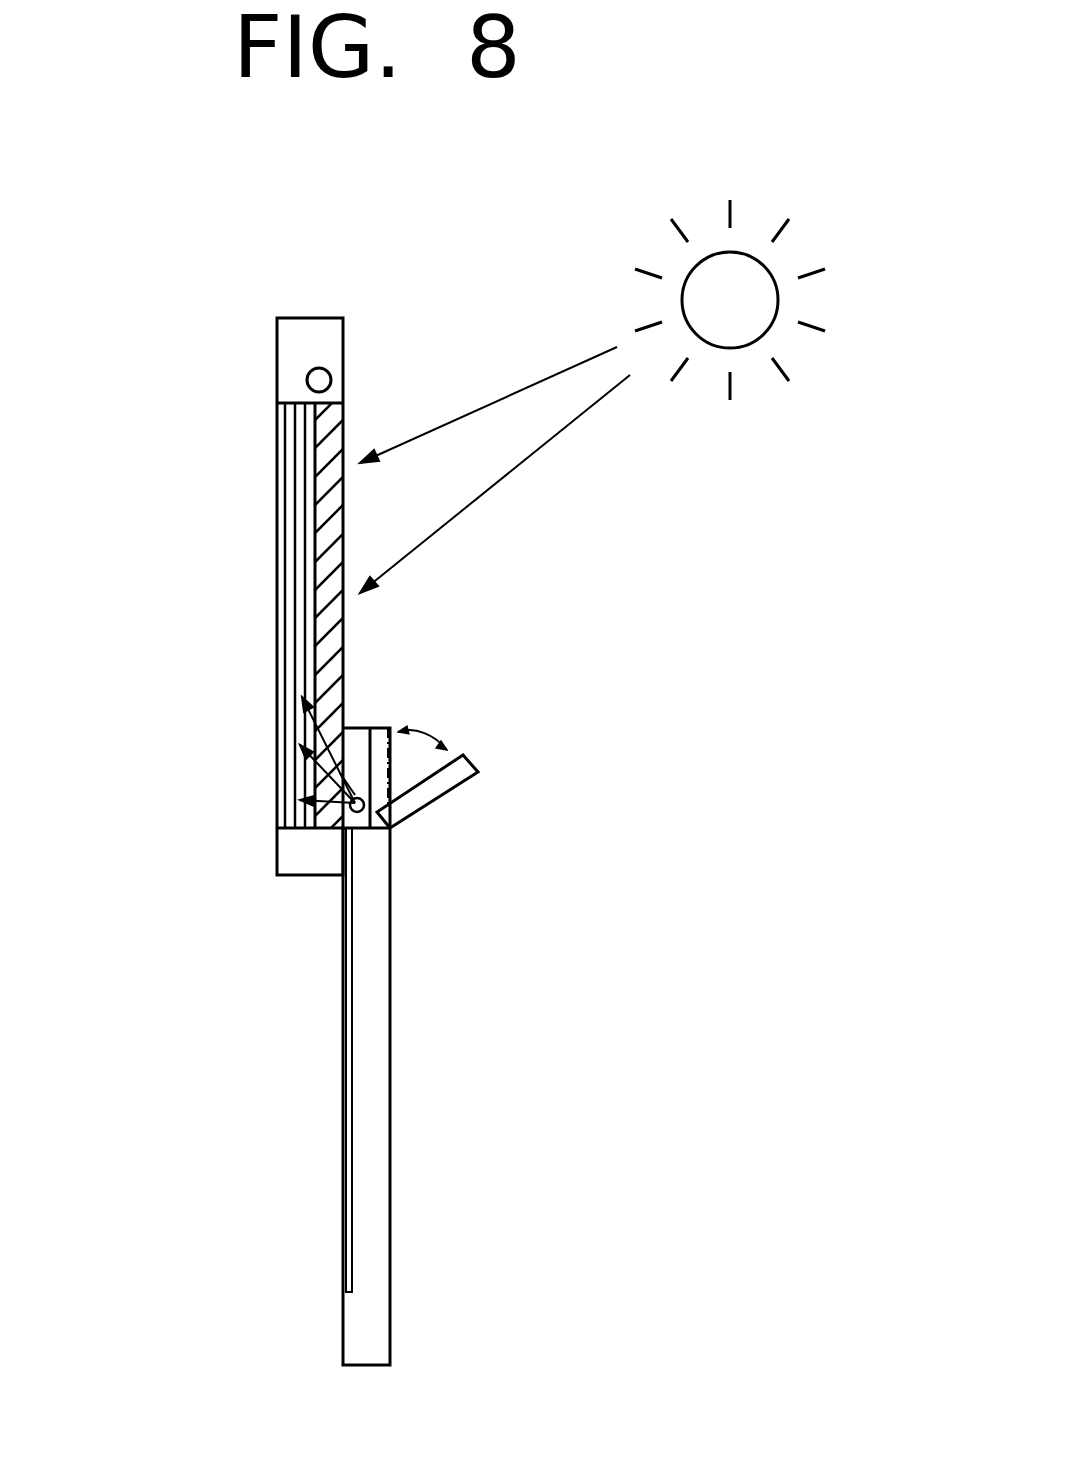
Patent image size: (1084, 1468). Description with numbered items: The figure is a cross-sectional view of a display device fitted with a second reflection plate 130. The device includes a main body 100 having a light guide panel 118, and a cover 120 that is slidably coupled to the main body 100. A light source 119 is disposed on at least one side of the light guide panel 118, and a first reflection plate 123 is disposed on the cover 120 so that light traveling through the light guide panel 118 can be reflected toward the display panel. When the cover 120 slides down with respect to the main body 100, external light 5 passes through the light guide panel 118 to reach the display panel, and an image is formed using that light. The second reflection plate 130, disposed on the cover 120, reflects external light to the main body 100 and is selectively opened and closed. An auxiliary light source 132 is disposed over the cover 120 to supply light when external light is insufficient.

The external light 5 is at (798, 352).
The main body 100 is at (250, 535).
The light guide panel 118 is at (345, 432).
The light source 119 is at (321, 380).
The cover 120 is at (370, 1032).
The first reflection plate 123 is at (345, 1140).
The second reflection plate 130 is at (448, 778).
The auxiliary light source 132 is at (340, 830).